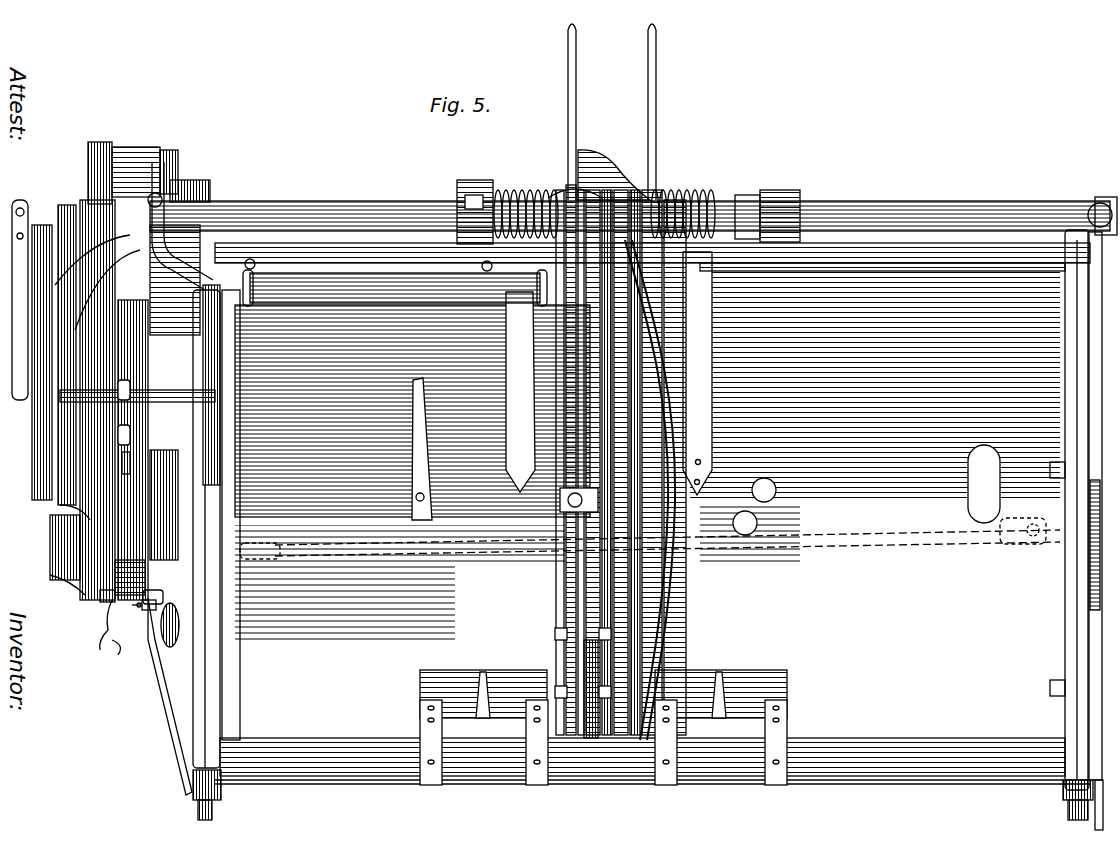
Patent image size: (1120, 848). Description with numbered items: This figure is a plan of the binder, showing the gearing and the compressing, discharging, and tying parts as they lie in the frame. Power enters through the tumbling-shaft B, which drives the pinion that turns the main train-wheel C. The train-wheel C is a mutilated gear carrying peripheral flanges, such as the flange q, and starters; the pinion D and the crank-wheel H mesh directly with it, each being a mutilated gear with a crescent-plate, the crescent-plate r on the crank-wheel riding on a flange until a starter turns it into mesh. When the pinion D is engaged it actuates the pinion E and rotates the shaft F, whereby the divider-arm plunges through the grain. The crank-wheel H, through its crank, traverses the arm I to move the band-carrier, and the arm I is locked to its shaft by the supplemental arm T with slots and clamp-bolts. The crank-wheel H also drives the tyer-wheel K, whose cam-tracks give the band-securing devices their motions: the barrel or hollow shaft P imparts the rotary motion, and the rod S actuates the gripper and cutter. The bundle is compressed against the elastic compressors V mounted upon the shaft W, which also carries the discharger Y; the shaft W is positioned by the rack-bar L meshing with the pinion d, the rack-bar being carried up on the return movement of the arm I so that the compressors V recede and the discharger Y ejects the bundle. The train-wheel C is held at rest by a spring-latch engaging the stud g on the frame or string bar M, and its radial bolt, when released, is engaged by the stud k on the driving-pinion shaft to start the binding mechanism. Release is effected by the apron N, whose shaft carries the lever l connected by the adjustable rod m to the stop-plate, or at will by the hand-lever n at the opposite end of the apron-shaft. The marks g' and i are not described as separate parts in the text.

The rack-bar L is at (92, 160).
The pinion d is at (140, 205).
The shaft W is at (633, 212).
The rod S is at (652, 253).
The barrel or hollow shaft P is at (395, 282).
The elastic compressors V is at (618, 112).
The supplemental arm T is at (14, 300).
The arm I is at (42, 362).
The tumbling-shaft B is at (67, 355).
The tyer-wheel K is at (137, 450).
The crank-wheel H is at (129, 412).
The pinion E is at (164, 495).
The pinion D is at (96, 470).
The crescent-plate r is at (129, 463).
The shaft F is at (378, 478).
The discharger Y is at (690, 373).
The stud g is at (54, 508).
The spring g' is at (52, 581).
The frame or string bar M is at (58, 540).
The main train-wheel C is at (100, 625).
The stud k is at (139, 614).
The rod m is at (167, 594).
The pivot roller i is at (171, 625).
The flange q is at (116, 647).
The lever l is at (168, 696).
The apron N is at (603, 727).
The hand-lever n is at (1100, 800).